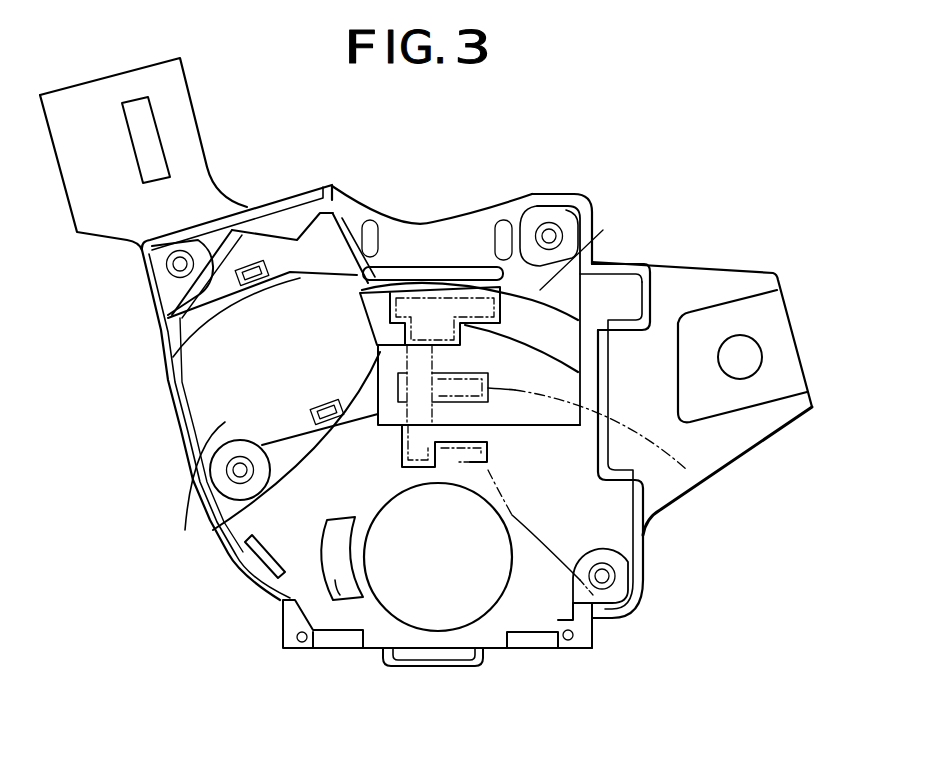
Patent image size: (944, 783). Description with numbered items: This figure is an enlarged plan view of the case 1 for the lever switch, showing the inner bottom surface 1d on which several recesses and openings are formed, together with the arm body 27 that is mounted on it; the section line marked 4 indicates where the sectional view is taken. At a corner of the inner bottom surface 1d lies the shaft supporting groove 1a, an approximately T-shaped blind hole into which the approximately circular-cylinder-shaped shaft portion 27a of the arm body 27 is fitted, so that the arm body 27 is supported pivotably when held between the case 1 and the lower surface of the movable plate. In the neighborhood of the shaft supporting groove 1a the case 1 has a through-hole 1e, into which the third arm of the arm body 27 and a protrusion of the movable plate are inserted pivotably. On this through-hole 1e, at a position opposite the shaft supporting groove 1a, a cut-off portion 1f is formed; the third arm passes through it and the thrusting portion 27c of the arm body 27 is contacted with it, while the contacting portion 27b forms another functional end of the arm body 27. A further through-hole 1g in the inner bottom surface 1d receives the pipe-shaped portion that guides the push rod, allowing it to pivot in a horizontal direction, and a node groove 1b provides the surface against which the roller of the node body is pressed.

The case 1 is at (640, 256).
The shaft supporting groove 1a is at (448, 300).
The node groove 1b is at (278, 230).
The inner bottom surface 1d is at (273, 517).
The through-hole 1e is at (477, 378).
The cut-off portion 1f is at (415, 458).
The through-hole 1g is at (342, 580).
The arm body 27 is at (590, 406).
The shaft portion 27a is at (410, 305).
The contacting portion 27b is at (508, 333).
The thrusting portion 27c is at (593, 595).
The section line of FIG. 4 is at (423, 200).